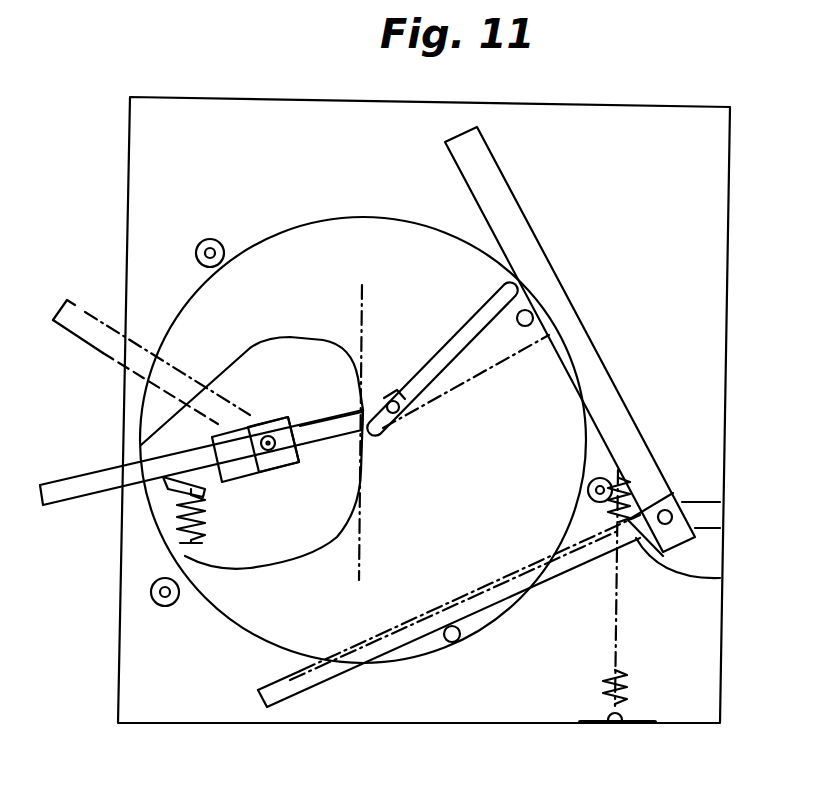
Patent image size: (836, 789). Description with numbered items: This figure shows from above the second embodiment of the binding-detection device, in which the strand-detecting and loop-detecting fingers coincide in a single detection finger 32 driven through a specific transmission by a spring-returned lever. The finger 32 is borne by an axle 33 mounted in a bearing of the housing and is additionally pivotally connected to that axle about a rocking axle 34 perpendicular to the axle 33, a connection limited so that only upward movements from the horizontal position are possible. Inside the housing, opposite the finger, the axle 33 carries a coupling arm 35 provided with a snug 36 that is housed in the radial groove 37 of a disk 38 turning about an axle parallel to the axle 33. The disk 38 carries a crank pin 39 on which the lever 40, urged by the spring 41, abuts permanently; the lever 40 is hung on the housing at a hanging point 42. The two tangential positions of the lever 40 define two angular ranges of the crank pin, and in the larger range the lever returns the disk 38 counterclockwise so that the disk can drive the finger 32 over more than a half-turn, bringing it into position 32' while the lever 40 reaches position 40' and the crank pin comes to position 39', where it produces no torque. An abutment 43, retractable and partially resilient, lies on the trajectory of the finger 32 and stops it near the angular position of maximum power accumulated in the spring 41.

The detection finger 32 is at (199, 457).
The finger position 32' is at (151, 335).
The axle 33 is at (263, 433).
The rocking axle 34 is at (240, 478).
The coupling arm 35 is at (337, 427).
The snug 36 is at (392, 402).
The radial groove 37 is at (422, 373).
The disk 38 is at (408, 233).
The crank pin 39 is at (578, 296).
The crank pin position 39' is at (443, 700).
The lever 40 is at (570, 308).
The lever position 40' is at (449, 643).
The spring 41 is at (720, 578).
The hanging point 42 is at (630, 521).
The abutment 43 is at (160, 493).